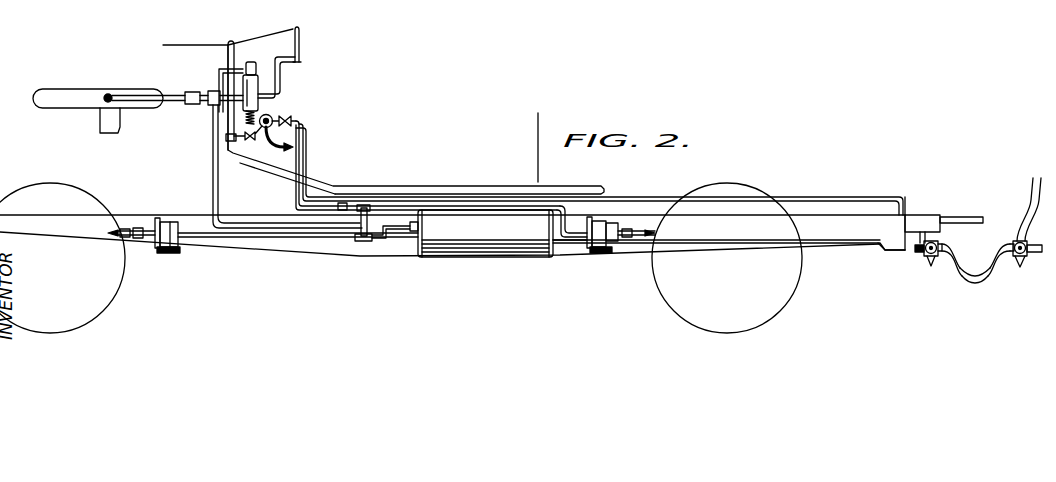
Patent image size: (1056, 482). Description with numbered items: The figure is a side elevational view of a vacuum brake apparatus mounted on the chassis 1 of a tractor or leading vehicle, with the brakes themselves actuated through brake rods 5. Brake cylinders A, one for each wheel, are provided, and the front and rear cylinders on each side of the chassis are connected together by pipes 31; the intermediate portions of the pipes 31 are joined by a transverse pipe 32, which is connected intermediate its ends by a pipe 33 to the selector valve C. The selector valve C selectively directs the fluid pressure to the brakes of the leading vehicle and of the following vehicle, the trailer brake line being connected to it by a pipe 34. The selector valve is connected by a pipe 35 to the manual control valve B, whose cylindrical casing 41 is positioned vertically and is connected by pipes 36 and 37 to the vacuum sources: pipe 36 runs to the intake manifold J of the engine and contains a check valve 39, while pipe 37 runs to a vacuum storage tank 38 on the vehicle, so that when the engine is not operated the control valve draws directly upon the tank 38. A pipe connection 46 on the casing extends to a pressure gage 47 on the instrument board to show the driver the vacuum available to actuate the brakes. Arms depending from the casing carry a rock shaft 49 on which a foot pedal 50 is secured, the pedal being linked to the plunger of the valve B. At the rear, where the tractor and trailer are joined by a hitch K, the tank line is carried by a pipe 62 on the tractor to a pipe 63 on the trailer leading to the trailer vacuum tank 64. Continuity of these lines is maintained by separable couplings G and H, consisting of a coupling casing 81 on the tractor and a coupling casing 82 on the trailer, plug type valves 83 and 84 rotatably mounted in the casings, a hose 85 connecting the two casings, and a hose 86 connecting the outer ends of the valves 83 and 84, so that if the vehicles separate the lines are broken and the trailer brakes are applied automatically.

The chassis 1 is at (93, 235).
The brake rods 5 is at (112, 230).
The pipes 31 is at (200, 242).
The transverse pipe 32 is at (367, 217).
The pipe 33 is at (342, 207).
The pipe 34 is at (455, 202).
The pipe 35 is at (226, 72).
The pipe 36 is at (110, 93).
The pipe 37 is at (214, 188).
The vacuum storage tank 38 is at (485, 233).
The check valve 39 is at (186, 94).
The cylindrical casing 41 is at (258, 104).
The pipe connection 46 is at (280, 62).
The pressure gage 47 is at (300, 52).
The rock shaft 49 is at (306, 122).
The foot pedal 50 is at (298, 140).
The pipe 62 is at (860, 243).
The pipe 63 is at (1036, 262).
The vacuum tank 64 is at (1029, 201).
The coupling casing 81 is at (927, 257).
The coupling casing 82 is at (1028, 262).
The plug type valve 83 is at (930, 260).
The plug type valve 84 is at (1007, 278).
The hose 85 is at (947, 275).
The hose 86 is at (970, 287).
The brake cylinders A is at (167, 250).
The manual control valve B is at (260, 84).
The selector valve C is at (272, 118).
The separable coupling G is at (925, 250).
The separable coupling H is at (1031, 203).
The intake manifold J is at (74, 92).
The tractor and trailer hitch K is at (940, 213).